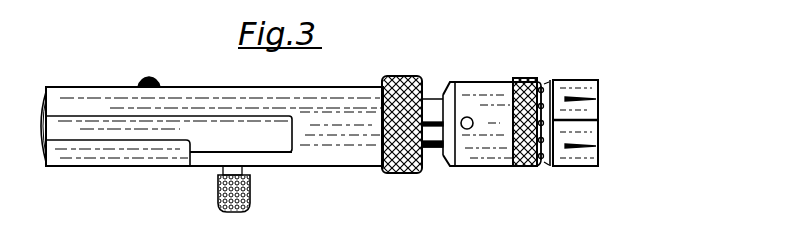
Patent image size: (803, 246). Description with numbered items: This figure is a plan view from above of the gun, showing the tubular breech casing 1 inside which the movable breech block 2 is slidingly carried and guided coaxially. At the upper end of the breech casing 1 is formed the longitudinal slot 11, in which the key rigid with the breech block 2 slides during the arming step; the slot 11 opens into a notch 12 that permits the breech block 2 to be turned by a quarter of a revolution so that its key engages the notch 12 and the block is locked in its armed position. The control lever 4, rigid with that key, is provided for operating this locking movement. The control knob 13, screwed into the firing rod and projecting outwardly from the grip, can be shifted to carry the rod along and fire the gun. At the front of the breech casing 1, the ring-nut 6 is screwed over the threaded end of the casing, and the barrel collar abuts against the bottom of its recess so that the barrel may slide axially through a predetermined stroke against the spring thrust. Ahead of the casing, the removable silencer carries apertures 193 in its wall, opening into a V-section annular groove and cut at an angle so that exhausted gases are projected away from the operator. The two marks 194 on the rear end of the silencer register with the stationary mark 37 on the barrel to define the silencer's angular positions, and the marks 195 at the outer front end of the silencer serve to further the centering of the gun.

The breech casing 1 is at (214, 126).
The longitudinal slot 11 is at (70, 140).
The notch 12 is at (199, 160).
The movable breech block 2 is at (45, 152).
The control knob 13 is at (160, 79).
The control lever 4 is at (250, 195).
The ring-nut 6 is at (407, 80).
The stationary mark 37 is at (430, 98).
The marks 194 is at (445, 147).
The apertures 193 is at (543, 82).
The marks 195 is at (596, 118).